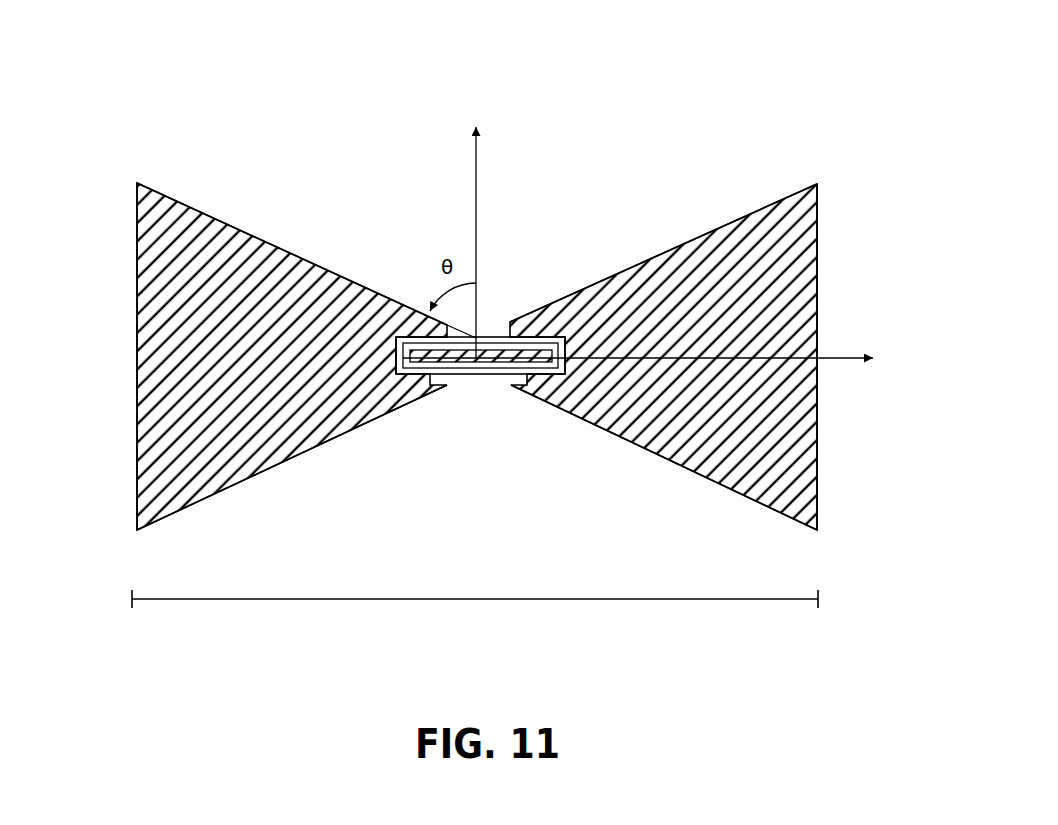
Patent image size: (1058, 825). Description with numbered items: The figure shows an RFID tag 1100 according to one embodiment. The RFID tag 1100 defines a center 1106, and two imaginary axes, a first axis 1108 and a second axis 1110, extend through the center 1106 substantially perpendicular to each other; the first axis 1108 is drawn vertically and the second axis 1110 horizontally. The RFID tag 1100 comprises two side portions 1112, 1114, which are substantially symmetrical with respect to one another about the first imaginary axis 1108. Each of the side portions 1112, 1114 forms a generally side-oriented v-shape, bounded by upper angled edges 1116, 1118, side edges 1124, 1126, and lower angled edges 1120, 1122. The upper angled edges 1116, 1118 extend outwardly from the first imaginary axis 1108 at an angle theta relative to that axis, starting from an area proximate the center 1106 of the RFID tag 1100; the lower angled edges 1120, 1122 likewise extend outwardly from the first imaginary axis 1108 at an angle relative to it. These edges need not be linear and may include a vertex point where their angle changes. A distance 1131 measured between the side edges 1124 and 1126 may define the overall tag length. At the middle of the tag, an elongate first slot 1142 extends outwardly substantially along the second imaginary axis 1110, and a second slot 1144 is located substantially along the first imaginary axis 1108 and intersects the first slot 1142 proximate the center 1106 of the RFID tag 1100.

The RFID tag 1100 is at (627, 72).
The center 1106 is at (477, 359).
The first axis 1108 is at (477, 170).
The second axis 1110 is at (827, 355).
The side portion 1112 is at (332, 190).
The side portion 1114 is at (648, 200).
The upper angled edge 1116 is at (253, 235).
The upper angled edge 1118 is at (712, 233).
The lower angled edge 1120 is at (305, 457).
The lower angled edge 1122 is at (687, 472).
The side edge 1124 is at (137, 375).
The side edge 1126 is at (818, 288).
The distance 1131 is at (455, 600).
The first slot 1142 is at (453, 372).
The second slot 1144 is at (478, 343).